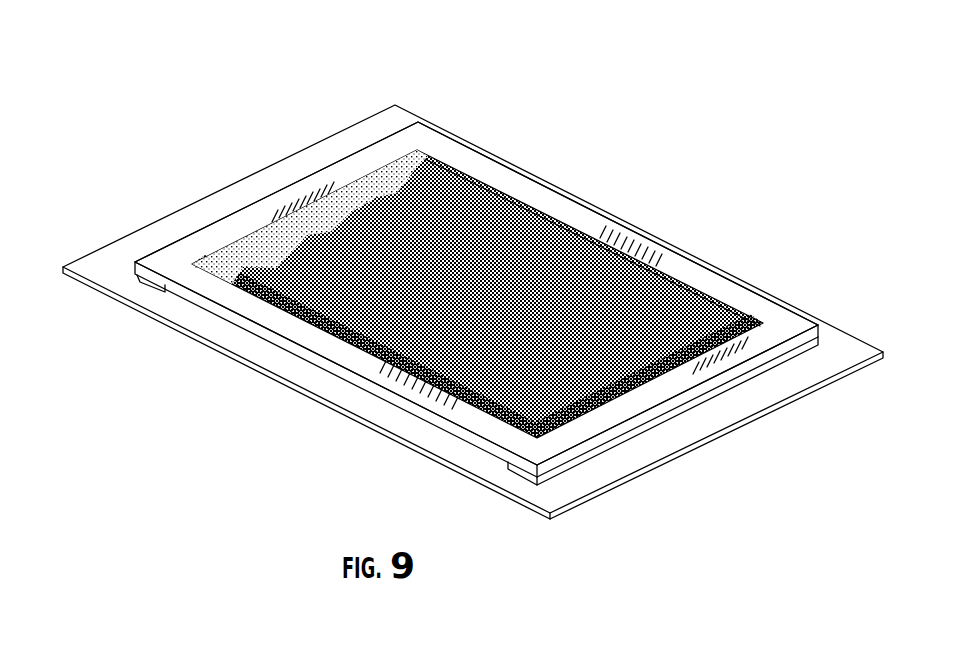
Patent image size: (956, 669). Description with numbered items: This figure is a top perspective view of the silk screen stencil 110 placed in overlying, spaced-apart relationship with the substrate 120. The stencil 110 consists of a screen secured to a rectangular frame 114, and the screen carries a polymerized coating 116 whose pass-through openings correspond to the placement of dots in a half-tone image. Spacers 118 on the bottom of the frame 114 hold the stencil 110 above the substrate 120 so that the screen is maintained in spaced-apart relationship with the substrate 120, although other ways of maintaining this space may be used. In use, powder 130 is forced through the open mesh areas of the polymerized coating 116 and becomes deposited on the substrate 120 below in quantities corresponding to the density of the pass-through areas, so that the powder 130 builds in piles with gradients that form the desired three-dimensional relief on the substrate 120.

The silk screen stencil 110 is at (780, 303).
The frame 114 is at (713, 288).
The polymerized coating 116 is at (548, 252).
The spacers 118 is at (152, 292).
The substrate 120 is at (358, 138).
The powder 130 is at (457, 173).